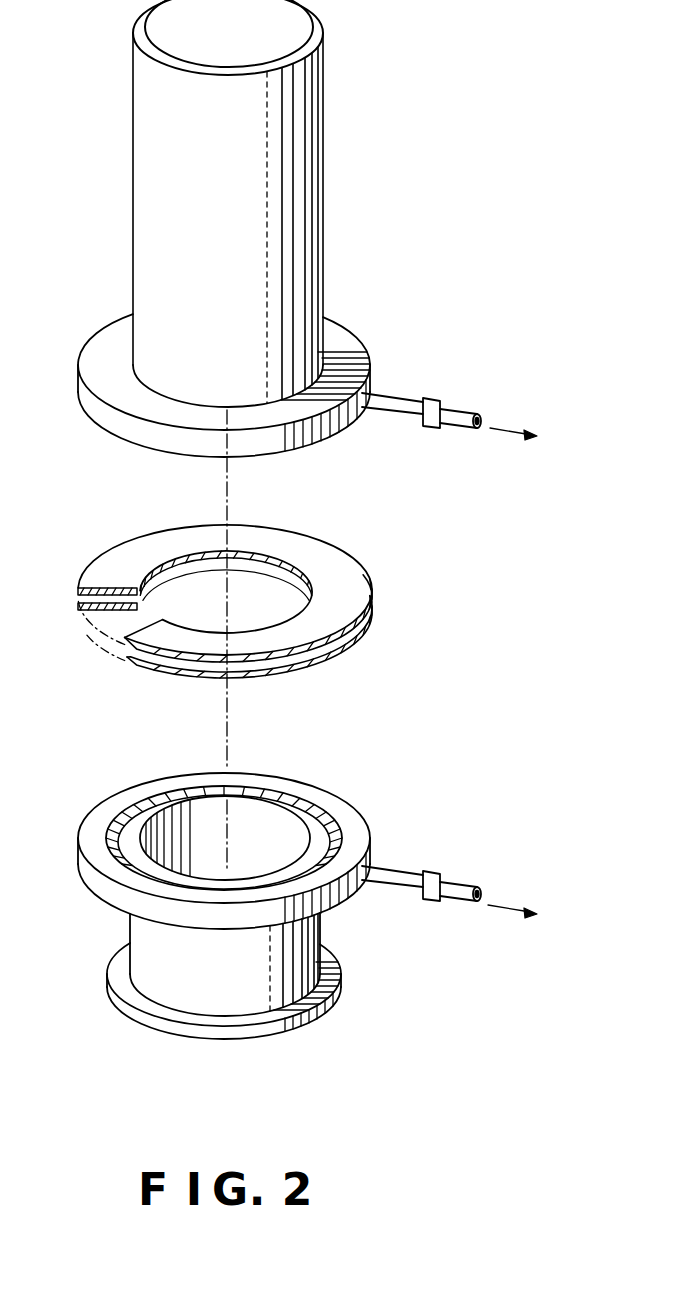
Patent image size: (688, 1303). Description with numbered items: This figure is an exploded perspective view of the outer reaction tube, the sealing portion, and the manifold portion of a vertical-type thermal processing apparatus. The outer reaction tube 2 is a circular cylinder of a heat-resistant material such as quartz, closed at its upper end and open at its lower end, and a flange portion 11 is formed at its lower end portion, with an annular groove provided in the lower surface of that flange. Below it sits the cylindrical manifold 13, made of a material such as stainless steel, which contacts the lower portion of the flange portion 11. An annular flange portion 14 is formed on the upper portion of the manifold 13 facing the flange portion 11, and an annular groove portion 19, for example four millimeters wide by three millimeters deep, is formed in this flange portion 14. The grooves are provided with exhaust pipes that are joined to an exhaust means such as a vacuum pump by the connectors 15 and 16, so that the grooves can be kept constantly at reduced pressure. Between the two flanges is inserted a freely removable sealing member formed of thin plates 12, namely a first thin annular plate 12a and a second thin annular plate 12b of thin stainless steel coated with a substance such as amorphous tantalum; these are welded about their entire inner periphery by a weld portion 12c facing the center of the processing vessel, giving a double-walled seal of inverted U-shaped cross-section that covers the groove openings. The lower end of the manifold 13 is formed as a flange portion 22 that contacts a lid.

The outer reaction tube 2 is at (323, 112).
The flange portion 11 is at (337, 332).
The connector 15 is at (433, 396).
The thin plates 12 is at (269, 600).
The first thin annular plate 12a is at (333, 553).
The second thin annular plate 12b is at (330, 660).
The weld portion 12c is at (252, 556).
The annular groove portion 19 is at (327, 823).
The annular flange portion 14 is at (343, 907).
The connector 16 is at (430, 876).
The manifold 13 is at (142, 933).
The flange portion 22 is at (122, 986).